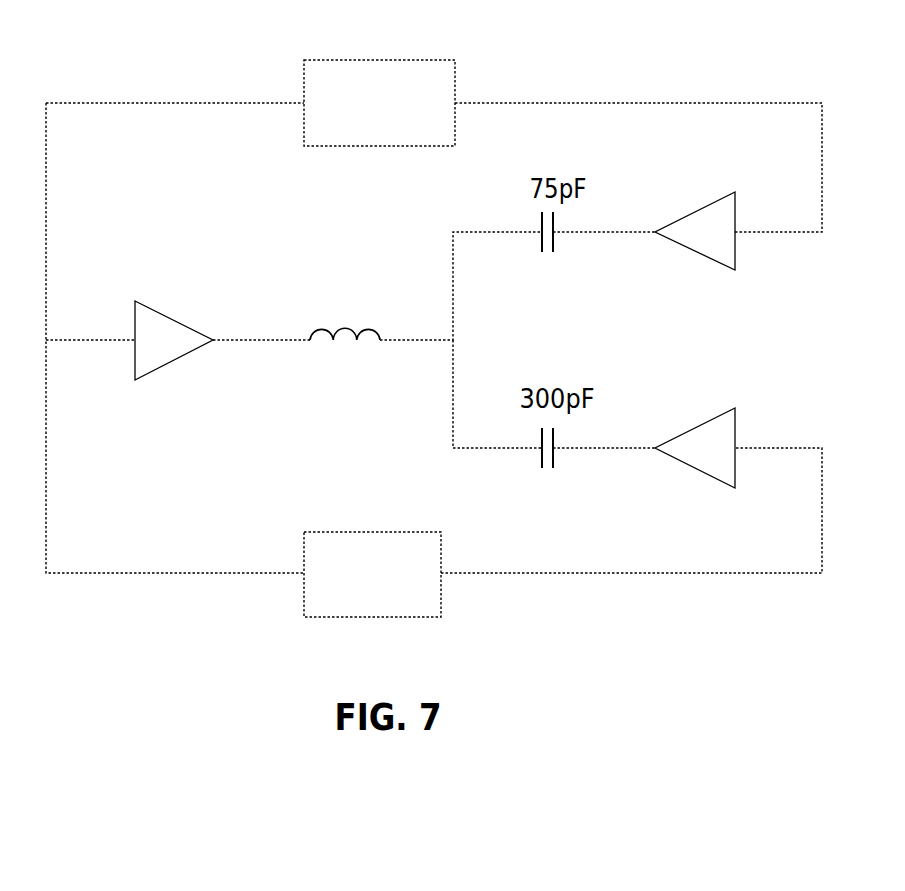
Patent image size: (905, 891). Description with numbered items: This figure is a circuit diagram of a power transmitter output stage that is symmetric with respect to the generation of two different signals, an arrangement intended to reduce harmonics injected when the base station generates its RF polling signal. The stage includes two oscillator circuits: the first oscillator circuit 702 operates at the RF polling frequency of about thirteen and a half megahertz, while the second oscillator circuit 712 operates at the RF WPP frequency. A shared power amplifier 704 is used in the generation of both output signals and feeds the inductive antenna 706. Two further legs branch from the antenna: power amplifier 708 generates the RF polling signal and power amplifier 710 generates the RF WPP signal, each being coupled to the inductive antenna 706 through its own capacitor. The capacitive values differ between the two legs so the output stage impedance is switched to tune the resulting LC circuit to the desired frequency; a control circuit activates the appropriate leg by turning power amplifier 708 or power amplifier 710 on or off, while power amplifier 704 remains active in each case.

The first oscillator circuit 702 is at (453, 70).
The power amplifier 704 is at (175, 323).
The inductive antenna 706 is at (378, 338).
The power amplifier 708 is at (728, 207).
The power amplifier 710 is at (733, 423).
The second oscillator circuit 712 is at (377, 532).